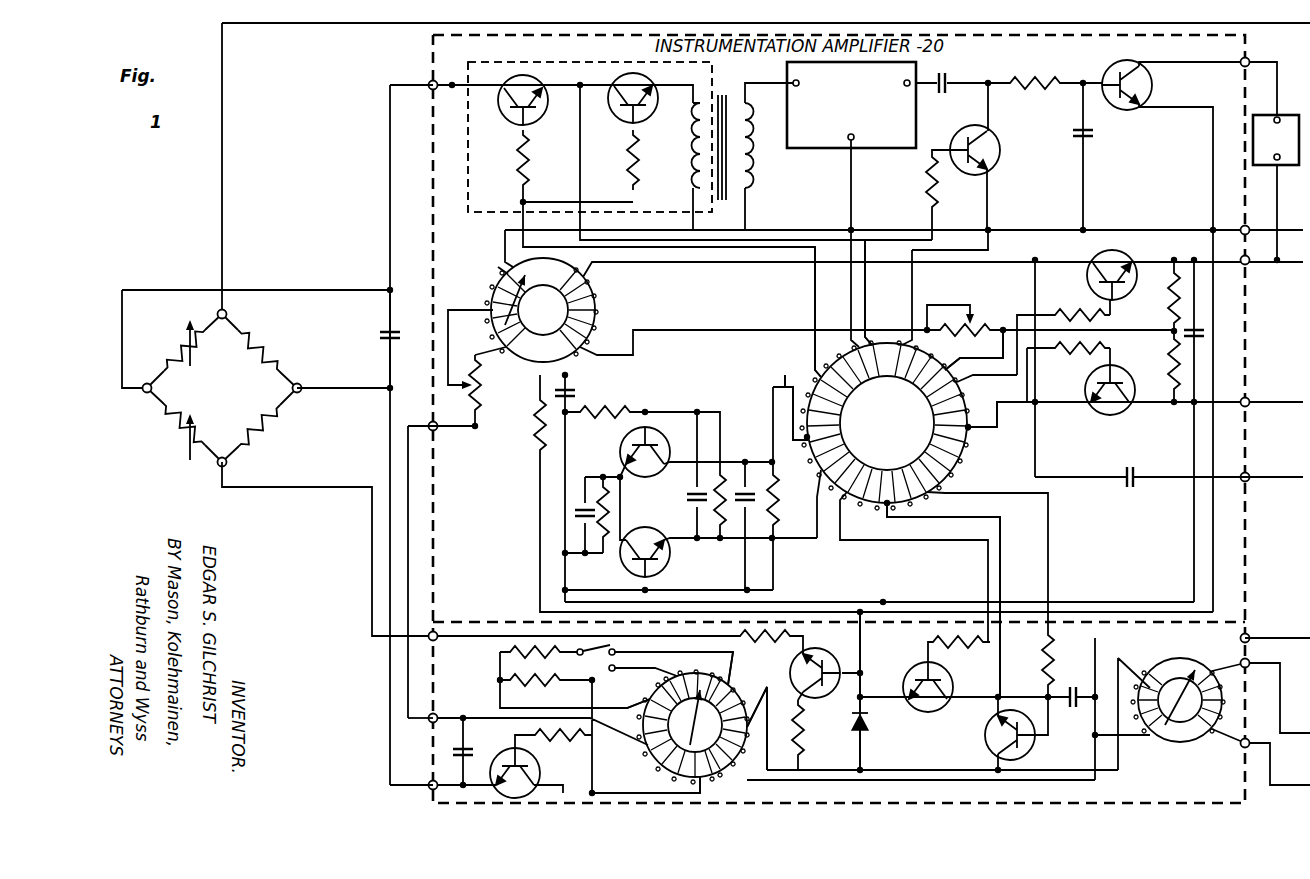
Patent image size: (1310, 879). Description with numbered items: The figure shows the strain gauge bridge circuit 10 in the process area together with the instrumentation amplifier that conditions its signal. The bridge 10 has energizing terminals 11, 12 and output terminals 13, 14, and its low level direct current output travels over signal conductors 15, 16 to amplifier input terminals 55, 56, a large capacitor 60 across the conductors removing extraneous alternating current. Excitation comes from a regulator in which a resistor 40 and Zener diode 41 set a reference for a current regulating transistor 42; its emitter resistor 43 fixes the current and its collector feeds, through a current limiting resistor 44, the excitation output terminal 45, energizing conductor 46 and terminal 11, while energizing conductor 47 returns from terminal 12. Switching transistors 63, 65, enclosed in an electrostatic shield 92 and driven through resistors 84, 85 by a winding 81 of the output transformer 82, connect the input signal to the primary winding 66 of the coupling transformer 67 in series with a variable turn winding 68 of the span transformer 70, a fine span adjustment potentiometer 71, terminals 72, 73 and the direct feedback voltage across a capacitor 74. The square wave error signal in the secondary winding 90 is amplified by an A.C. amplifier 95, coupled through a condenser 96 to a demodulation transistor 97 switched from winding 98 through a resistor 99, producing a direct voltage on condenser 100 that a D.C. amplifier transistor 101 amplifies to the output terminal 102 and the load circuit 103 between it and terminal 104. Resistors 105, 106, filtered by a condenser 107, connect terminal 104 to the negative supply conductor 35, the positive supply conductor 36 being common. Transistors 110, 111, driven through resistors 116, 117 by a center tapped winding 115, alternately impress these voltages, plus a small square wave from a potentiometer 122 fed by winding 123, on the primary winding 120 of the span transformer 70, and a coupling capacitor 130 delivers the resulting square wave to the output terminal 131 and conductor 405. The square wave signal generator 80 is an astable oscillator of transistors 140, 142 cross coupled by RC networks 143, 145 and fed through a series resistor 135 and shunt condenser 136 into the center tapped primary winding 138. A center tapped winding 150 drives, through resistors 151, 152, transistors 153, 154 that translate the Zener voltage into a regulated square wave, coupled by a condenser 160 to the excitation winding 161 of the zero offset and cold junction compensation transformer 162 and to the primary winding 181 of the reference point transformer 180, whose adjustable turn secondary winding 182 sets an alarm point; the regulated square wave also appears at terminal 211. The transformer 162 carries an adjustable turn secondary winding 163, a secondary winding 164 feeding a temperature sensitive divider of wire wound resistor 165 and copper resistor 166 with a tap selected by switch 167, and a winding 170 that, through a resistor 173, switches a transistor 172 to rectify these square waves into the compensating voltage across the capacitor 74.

The strain gauge bridge circuit 10 is at (228, 396).
The energizing terminal 11 is at (227, 462).
The energizing terminal 12 is at (227, 315).
The output terminal 13 is at (145, 393).
The output terminal 14 is at (300, 383).
The signal conductor 15 is at (275, 290).
The signal conductor 16 is at (372, 388).
The energizing conductor 46 is at (285, 487).
The energizing conductor 47 is at (280, 23).
The capacitor 60 is at (386, 330).
The input terminal 55 is at (430, 84).
The excitation output terminal 45 is at (428, 640).
The terminal 72 is at (436, 432).
The terminal 73 is at (428, 724).
The input terminal 56 is at (428, 788).
The electrostatic shield 92 is at (470, 220).
The switching transistor 63 is at (540, 122).
The switching transistor 65 is at (620, 118).
The resistor 84 is at (518, 155).
The resistor 85 is at (628, 165).
The primary winding 66 is at (690, 170).
The coupling transformer 67 is at (726, 133).
The secondary winding 90 is at (752, 165).
The A.C. amplifier 95 is at (808, 150).
The condenser 96 is at (940, 95).
The demodulation transistor 97 is at (995, 135).
The resistor 99 is at (927, 188).
The condenser 100 is at (1072, 138).
The D.C. amplifier transistor 101 is at (1118, 110).
The output terminal 102 is at (1250, 58).
The load circuit 103 is at (1265, 167).
The positive supply conductor 36 is at (1290, 222).
The terminal 104 is at (1250, 268).
The negative supply conductor 35 is at (1280, 392).
The square wave output terminal 131 is at (1250, 472).
The conductor 405 is at (1288, 484).
The filter condenser 107 is at (1205, 330).
The resistor 105 is at (1168, 292).
The resistor 106 is at (1165, 360).
The transistor 110 is at (1095, 255).
The resistor 116 is at (1082, 312).
The transistor 111 is at (1100, 415).
The resistor 117 is at (1070, 357).
The coupling capacitor 130 is at (1135, 490).
The potentiometer 122 is at (993, 318).
The winding 123 is at (940, 355).
The center tapped winding 115 is at (985, 405).
The output transformer 82 is at (898, 416).
The winding 81 is at (836, 335).
The winding 98 is at (880, 330).
The primary winding 138 is at (812, 455).
The center tapped winding 150 is at (870, 510).
The span transformer 70 is at (552, 322).
The variable turn winding 68 is at (494, 283).
The primary winding 120 is at (612, 292).
The fine span adjustment potentiometer 71 is at (470, 407).
The shunt condenser 136 is at (575, 393).
The series resistor 135 is at (532, 434).
The transistor 140 is at (620, 445).
The square wave signal generator 80 is at (668, 501).
The transistor 142 is at (655, 575).
The RC network 143 is at (747, 480).
The RC network 145 is at (740, 538).
The current limiting resistor 44 is at (770, 650).
The current regulating transistor 42 is at (850, 645).
The resistor 43 is at (812, 722).
The Zener diode 41 is at (845, 735).
The resistor 40 is at (875, 648).
The resistor 151 is at (955, 655).
The transistor 153 is at (915, 708).
The resistor 152 is at (1042, 662).
The transistor 154 is at (990, 738).
The condenser 160 is at (1078, 708).
The reference point transformer 180 is at (1200, 769).
The primary winding 181 is at (1162, 752).
The adjustable turn secondary winding 182 is at (1232, 658).
The terminal 211 is at (1250, 632).
The resistor 165 is at (520, 648).
The switch 167 is at (590, 660).
The resistor 166 is at (552, 688).
The secondary winding 164 is at (735, 690).
The zero offset and cold junction compensation transformer 162 is at (710, 736).
The excitation winding 161 is at (775, 700).
The adjustable turn secondary winding 163 is at (640, 745).
The winding 170 is at (715, 785).
The capacitor 74 is at (470, 745).
The resistor 173 is at (548, 745).
The switching transistor 172 is at (540, 772).